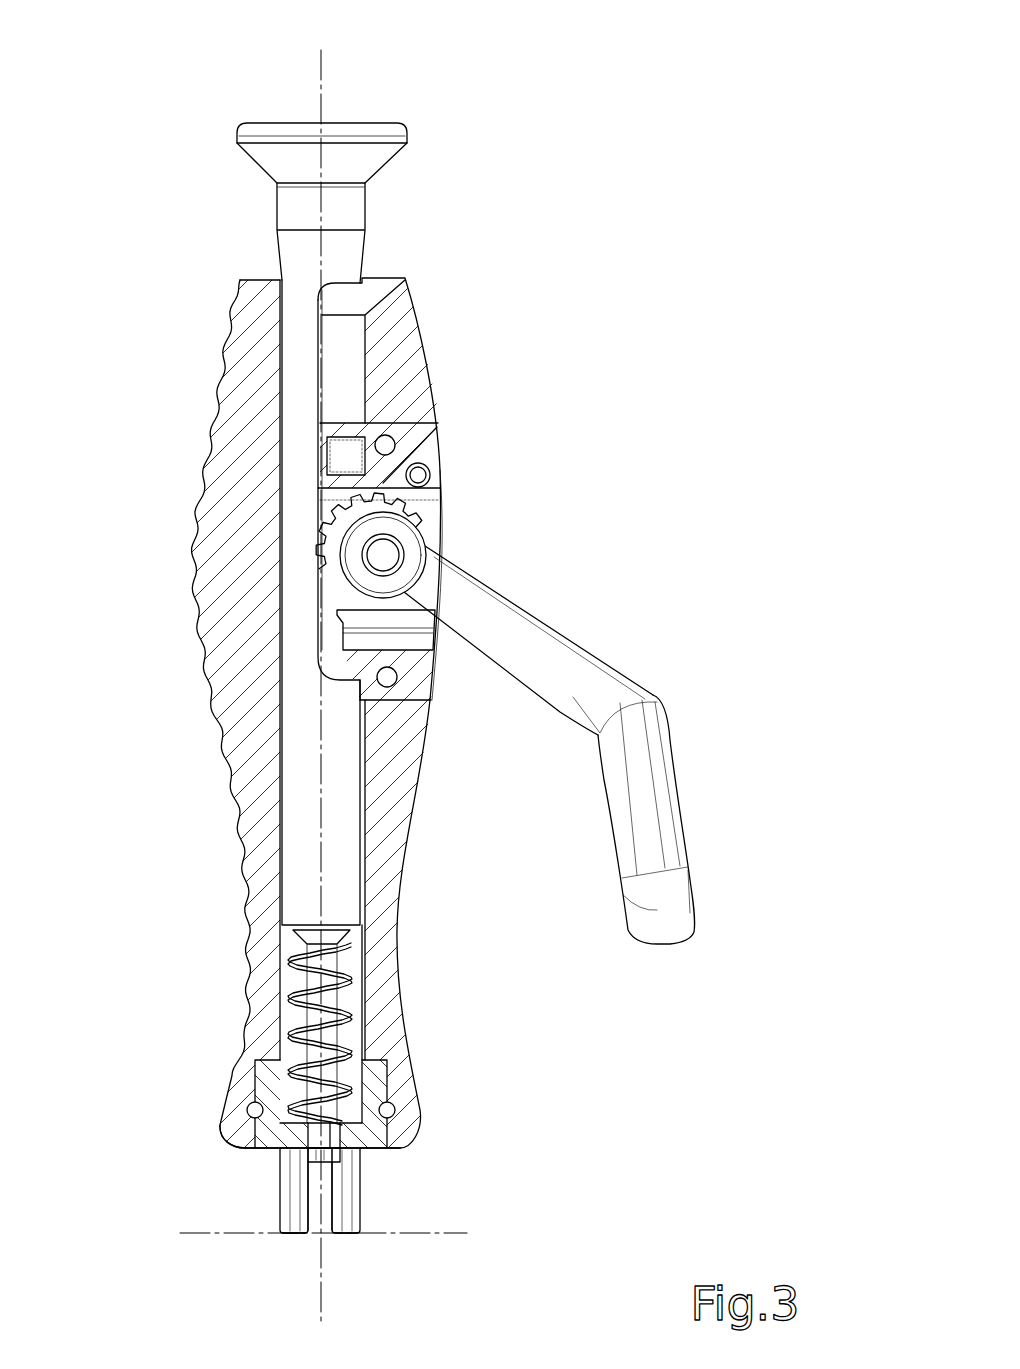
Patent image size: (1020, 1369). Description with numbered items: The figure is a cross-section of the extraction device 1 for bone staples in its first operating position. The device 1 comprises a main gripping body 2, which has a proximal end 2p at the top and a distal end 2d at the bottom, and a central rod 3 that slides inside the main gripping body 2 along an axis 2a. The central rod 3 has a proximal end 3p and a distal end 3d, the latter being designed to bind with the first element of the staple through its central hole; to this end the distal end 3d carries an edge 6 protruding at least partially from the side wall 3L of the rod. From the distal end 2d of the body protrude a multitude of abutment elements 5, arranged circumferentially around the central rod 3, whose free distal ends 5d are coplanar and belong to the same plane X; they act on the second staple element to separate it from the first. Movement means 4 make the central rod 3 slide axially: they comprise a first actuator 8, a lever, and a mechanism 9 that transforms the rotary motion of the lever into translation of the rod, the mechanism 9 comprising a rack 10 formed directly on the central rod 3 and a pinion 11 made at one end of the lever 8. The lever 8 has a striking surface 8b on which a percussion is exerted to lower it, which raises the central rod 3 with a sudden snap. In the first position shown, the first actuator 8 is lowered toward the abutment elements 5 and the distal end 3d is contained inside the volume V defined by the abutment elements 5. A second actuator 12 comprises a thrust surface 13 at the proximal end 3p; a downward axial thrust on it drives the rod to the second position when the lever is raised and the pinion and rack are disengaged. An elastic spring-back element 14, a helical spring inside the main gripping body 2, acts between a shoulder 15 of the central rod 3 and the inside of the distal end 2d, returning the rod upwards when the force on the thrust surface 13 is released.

The extraction device 1 is at (435, 676).
The main gripping body 2 is at (240, 592).
The proximal end of the main gripping body 2p is at (240, 300).
The distal end of the main gripping body 2d is at (247, 1147).
The axis 2a is at (294, 1257).
The central rod 3 is at (333, 668).
The proximal end of the central rod 3p is at (340, 252).
The distal end of the central rod 3d is at (313, 1137).
The side wall of the central rod 3L is at (350, 1150).
The movement means 4 is at (475, 527).
The abutment elements 5 is at (331, 1250).
The free distal ends of the abutment elements 5d is at (295, 1235).
The edge 6 is at (340, 1160).
The first actuator 8 is at (610, 745).
The striking surface 8b is at (690, 887).
The mechanism 9 is at (438, 545).
The rack 10 is at (332, 512).
The pinion 11 is at (435, 515).
The second actuator 12 is at (380, 94).
The thrust surface 13 is at (293, 123).
The elastic spring-back element 14 is at (340, 1020).
The shoulder 15 is at (360, 935).
The plane X is at (455, 1235).
The volume V is at (328, 1227).